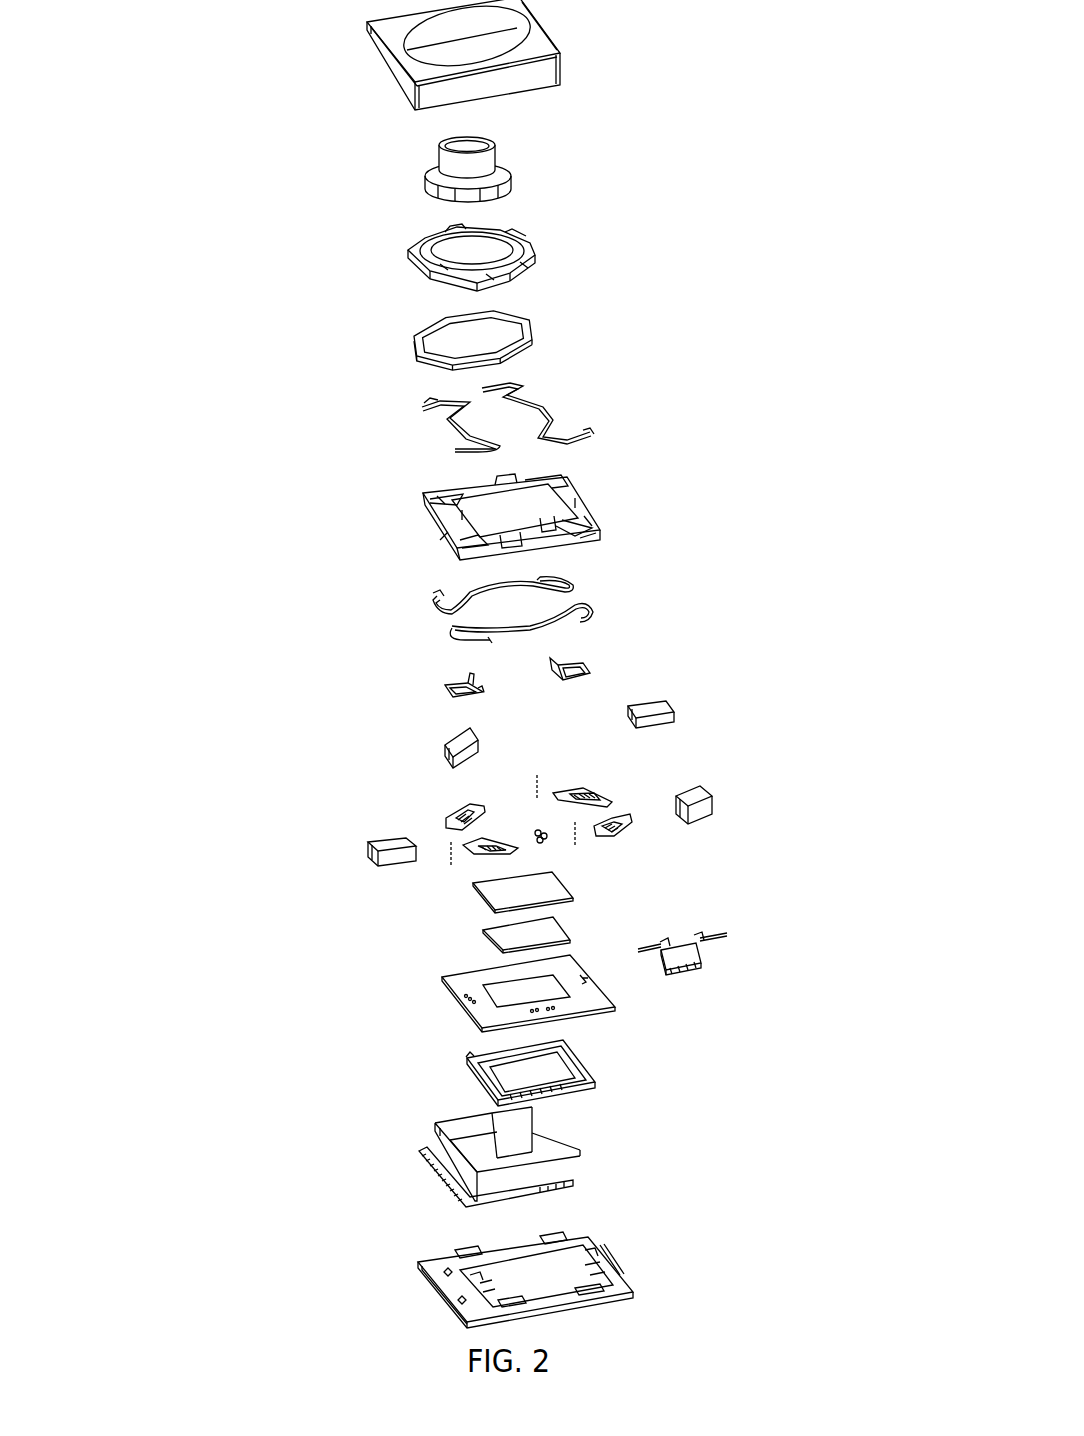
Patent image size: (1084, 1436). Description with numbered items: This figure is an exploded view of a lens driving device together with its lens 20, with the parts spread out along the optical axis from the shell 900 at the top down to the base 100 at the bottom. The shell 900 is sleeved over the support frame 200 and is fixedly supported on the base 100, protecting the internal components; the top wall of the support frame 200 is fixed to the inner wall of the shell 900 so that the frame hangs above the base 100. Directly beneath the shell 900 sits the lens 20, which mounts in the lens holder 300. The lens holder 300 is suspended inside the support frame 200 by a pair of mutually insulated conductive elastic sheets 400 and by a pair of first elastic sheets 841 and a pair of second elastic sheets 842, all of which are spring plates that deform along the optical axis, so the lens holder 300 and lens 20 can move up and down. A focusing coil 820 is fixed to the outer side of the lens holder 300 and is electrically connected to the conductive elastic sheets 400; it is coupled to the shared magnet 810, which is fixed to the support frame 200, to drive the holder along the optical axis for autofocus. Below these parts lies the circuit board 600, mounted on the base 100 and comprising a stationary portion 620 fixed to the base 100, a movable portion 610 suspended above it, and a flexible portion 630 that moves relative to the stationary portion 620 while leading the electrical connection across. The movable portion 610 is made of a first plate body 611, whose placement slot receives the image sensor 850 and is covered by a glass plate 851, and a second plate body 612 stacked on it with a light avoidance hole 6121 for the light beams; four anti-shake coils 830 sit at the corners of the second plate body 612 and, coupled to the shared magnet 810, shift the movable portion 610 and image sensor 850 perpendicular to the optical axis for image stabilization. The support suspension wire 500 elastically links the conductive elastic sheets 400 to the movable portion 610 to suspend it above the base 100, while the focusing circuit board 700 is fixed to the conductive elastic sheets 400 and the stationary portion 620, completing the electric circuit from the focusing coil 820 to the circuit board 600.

The shell 900 is at (375, 50).
The lens 20 is at (435, 172).
The lens holder 300 is at (410, 257).
The focusing coil 820 is at (412, 338).
The conductive elastic sheets 400 is at (421, 406).
The support frame 200 is at (423, 497).
The first elastic sheets 841 is at (598, 610).
The second elastic sheets 842 is at (588, 665).
The support suspension wire 500 is at (541, 784).
The anti-shake coil 830 is at (453, 808).
The shared magnet 810 is at (700, 792).
The glass plate 851 is at (553, 896).
The image sensor 850 is at (543, 932).
The circuit board 600 is at (275, 957).
The movable portion 610 is at (353, 925).
The second plate body 612 is at (534, 999).
The light avoidance hole 6121 is at (537, 993).
The first plate body 611 is at (467, 1057).
The flexible portion 630 is at (434, 1124).
The stationary portion 620 is at (430, 1153).
The focusing circuit board 700 is at (683, 967).
The base 100 is at (418, 1268).